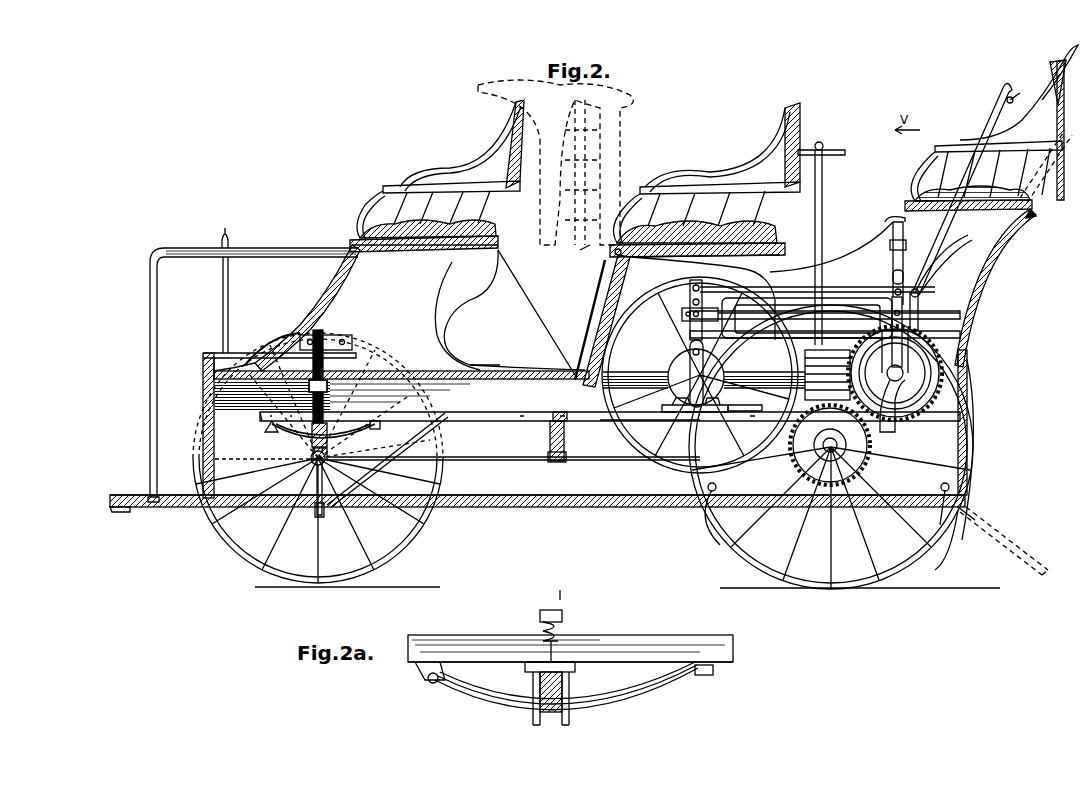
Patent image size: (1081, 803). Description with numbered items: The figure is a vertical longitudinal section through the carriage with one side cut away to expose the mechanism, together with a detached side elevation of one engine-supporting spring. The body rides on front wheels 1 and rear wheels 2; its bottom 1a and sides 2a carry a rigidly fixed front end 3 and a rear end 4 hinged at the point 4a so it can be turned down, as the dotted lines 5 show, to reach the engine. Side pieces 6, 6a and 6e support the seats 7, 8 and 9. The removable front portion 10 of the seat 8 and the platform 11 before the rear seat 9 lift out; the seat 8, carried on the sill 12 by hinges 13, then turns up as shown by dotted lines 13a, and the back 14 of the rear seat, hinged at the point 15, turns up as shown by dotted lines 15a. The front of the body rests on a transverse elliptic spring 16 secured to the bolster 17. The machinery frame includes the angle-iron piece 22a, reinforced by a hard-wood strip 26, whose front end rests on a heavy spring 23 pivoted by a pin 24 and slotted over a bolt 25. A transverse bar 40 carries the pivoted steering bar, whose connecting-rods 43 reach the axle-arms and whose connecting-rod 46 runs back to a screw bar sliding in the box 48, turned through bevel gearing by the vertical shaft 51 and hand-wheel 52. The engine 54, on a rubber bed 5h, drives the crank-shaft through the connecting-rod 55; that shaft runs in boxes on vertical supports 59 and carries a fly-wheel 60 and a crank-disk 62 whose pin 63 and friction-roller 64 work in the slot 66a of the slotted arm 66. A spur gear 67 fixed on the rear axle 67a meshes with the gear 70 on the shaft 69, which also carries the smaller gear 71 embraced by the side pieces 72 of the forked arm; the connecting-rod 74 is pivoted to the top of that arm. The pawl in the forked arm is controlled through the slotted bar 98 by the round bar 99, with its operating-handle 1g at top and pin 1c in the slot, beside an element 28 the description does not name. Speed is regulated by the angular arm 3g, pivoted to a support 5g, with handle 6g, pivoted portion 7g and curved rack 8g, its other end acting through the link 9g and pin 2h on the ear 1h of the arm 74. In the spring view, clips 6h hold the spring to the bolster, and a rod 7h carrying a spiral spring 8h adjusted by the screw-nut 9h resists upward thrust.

In FIG. 2, the front wheels 1 is at (200, 500).
In FIG. 2, the under side of carriage-body 1a is at (492, 507).
In FIG. 2, the rear wheels 2 is at (975, 470).
In FIG. 2, the sides of carriage-body 2a is at (595, 507).
In FIG. 2, the front end 3 is at (203, 392).
In FIG. 2, the rear end 4 is at (975, 415).
In FIG. 2, the hinge point of rear end 4a is at (965, 505).
In FIG. 2, the dotted lines showing turned-down rear end 5 is at (1045, 560).
In FIG. 2, the support 5g is at (965, 320).
In FIG. 2, the bed of vulcanized india-rubber 5h is at (732, 415).
In FIG. 2, the side piece 6 is at (452, 330).
In FIG. 2, the side piece 6a is at (545, 345).
In FIG. 2, the body rear panel 6e is at (782, 280).
In FIG. 2, the handle 6g is at (985, 100).
In FIG. 2A, the clips 6h is at (535, 688).
In FIG. 2, the seat 7 is at (380, 215).
In FIG. 2, the pivoted portion 7g is at (1005, 105).
In FIG. 2A, the rod 7h is at (545, 662).
In FIG. 2, the seat 8 is at (672, 222).
In FIG. 2, the curved rack 8g is at (945, 265).
In FIG. 2A, the spiral spring 8h is at (565, 628).
In FIG. 2, the rear seat 9 is at (960, 190).
In FIG. 2, the connecting-link 9g is at (703, 289).
In FIG. 2, the screw-nut 9h is at (565, 605).
In FIG. 2, the front portion of seat 10 is at (600, 265).
In FIG. 2, the platform 11 is at (838, 298).
In FIG. 2, the sill 12 is at (630, 268).
In FIG. 2, the hinges 13 is at (613, 256).
In FIG. 2, the dotted lines showing turned-up seat 13a is at (500, 88).
In FIG. 2, the back of rear seat 14 is at (985, 282).
In FIG. 2, the hinge point of seat back 15 is at (1034, 215).
In FIG. 2, the dotted lines showing turned-up seat back 15a is at (1035, 205).
In FIG. 2, the transverse elliptic spring 16 is at (345, 349).
In FIG. 2, the bolster 17 is at (330, 335).
In FIG. 2, the pin 1c is at (925, 278).
In FIG. 2, the operating-handle 1g is at (888, 224).
In FIG. 2, the ear 1h is at (677, 304).
In FIG. 2, the pin 2h is at (706, 306).
In FIG. 2, the angular arm 3g is at (812, 287).
In FIG. 2, the angle-iron frame-piece 22a is at (498, 412).
In FIG. 2A, the angle-iron frame-piece 22a is at (642, 662).
In FIG. 2, the heavy spring 23 is at (352, 430).
In FIG. 2A, the heavy spring 23 is at (665, 698).
In FIG. 2, the pin 24 is at (272, 430).
In FIG. 2A, the pin 24 is at (425, 682).
In FIG. 2, the bolt 25 is at (382, 426).
In FIG. 2A, the bolt 25 is at (712, 676).
In FIG. 2, the strip of hard wood 26 is at (530, 405).
In FIG. 2A, the strip of hard wood 26 is at (600, 645).
In FIG. 2, the pin 28 is at (895, 292).
In FIG. 2, the transverse bar 40 is at (566, 440).
In FIG. 2, the connecting-rod 43 is at (500, 459).
In FIG. 2, the connecting-rod 46 is at (640, 462).
In FIG. 2, the box 48 is at (908, 296).
In FIG. 2, the vertical shaft 51 is at (815, 200).
In FIG. 2, the hand-wheel 52 is at (822, 145).
In FIG. 2, the engine or motor 54 is at (815, 355).
In FIG. 2, the connecting-rod 55 is at (760, 404).
In FIG. 2, the vertical supports 59 is at (672, 405).
In FIG. 2, the fly-wheel 60 is at (648, 310).
In FIG. 2, the crank-disk 62 is at (660, 350).
In FIG. 2, the pin 63 is at (705, 345).
In FIG. 2, the friction-roller 64 is at (705, 334).
In FIG. 2, the slotted arm 66 is at (686, 365).
In FIG. 2, the slot 66a is at (740, 372).
In FIG. 2, the spur gear-wheel 67 is at (870, 470).
In FIG. 2, the rear axle 67a is at (822, 448).
In FIG. 2, the shaft 69 is at (945, 355).
In FIG. 2, the spur gear-wheel 70 is at (935, 375).
In FIG. 2, the smaller gear-wheel 71 is at (945, 385).
In FIG. 2, the side pieces of forked arm 72 is at (920, 318).
In FIG. 2, the connecting-rod 74 is at (858, 319).
In FIG. 2, the slotted bar 98 is at (893, 276).
In FIG. 2, the round bar 99 is at (890, 243).